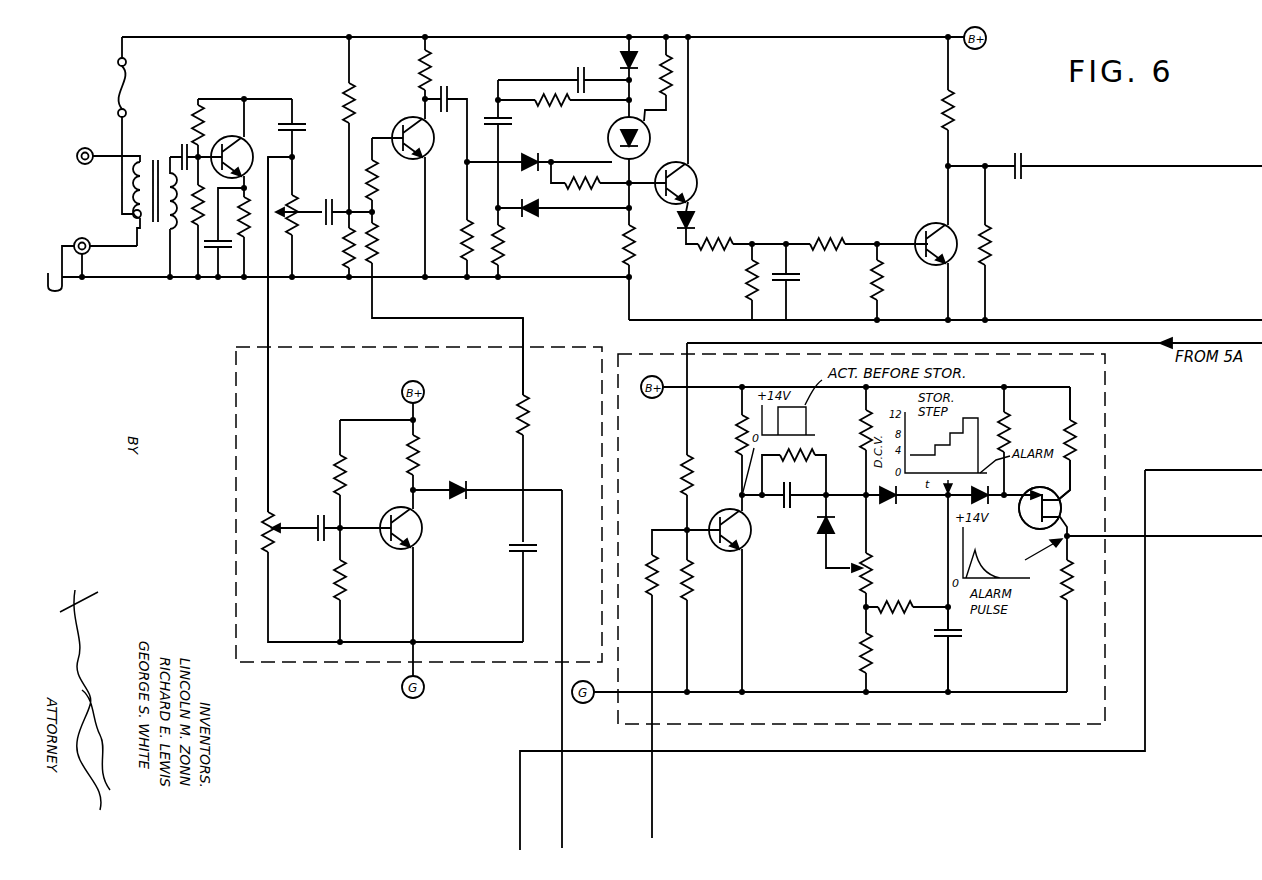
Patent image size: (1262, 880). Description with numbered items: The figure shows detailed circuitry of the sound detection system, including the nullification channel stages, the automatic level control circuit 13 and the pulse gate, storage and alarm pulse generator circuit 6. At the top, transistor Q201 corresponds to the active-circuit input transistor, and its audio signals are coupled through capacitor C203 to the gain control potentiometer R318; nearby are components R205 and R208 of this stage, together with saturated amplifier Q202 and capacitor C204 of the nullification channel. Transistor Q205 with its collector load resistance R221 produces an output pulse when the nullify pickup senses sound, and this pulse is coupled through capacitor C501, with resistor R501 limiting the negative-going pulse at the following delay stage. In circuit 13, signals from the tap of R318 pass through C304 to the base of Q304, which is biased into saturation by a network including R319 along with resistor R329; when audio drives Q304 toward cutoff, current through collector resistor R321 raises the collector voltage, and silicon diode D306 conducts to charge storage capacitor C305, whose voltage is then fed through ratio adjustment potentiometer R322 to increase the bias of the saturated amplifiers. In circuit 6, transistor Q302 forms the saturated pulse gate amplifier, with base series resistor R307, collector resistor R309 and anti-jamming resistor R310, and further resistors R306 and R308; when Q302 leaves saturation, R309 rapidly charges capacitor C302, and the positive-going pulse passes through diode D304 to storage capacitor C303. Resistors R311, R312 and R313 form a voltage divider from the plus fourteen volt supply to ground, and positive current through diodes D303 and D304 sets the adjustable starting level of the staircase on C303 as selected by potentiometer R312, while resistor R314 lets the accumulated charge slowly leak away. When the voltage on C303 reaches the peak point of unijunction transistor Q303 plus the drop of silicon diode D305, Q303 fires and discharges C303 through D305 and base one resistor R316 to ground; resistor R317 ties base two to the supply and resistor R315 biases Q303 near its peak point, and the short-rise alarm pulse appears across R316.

The transistor Q201 is at (249, 140).
The coupling capacitor C203 is at (318, 128).
The variable resistor R205 is at (294, 212).
The capacitor C204 is at (326, 218).
The resistor R208 is at (383, 243).
The saturated amplifier transistor Q202 is at (396, 121).
The collector load resistance R221 is at (953, 96).
The capacitor C501 is at (1021, 151).
The transistor Q205 is at (936, 222).
The resistor R501 is at (991, 240).
The pulse gate, storage and alarm pulse generator circuit 6 is at (1109, 378).
The automatic level control circuit 13 is at (236, 377).
The resistor R306 is at (684, 470).
The base series resistor R307 is at (652, 565).
The resistor R308 is at (692, 582).
The collector resistor R309 is at (738, 450).
The resistor R310 is at (812, 452).
The resistor R311 is at (862, 430).
The capacitor C302 is at (788, 508).
The saturated pulse gate amplifier transistor Q302 is at (750, 545).
The diode D303 is at (822, 540).
The diode D304 is at (878, 504).
The silicon diode D305 is at (998, 505).
The unijunction transistor Q303 is at (1062, 510).
The adjustable resistor R312 is at (872, 568).
The resistor R313 is at (860, 655).
The discharge resistor R314 is at (905, 612).
The bias resistor R315 is at (1009, 428).
The base one resistor R316 is at (1063, 600).
The base two resistor R317 is at (1066, 437).
The storage capacitor C303 is at (963, 638).
The resistor R329 is at (336, 462).
The collector resistor R321 is at (419, 458).
The ratio adjustment potentiometer R322 is at (530, 418).
The silicon diode D306 is at (450, 500).
The ALC saturated amplifier transistor Q304 is at (424, 545).
The gain control potentiometer R318 is at (270, 540).
The coupling capacitor C304 is at (320, 545).
The base bias resistor R319 is at (346, 586).
The ALC storage capacitor C305 is at (508, 552).